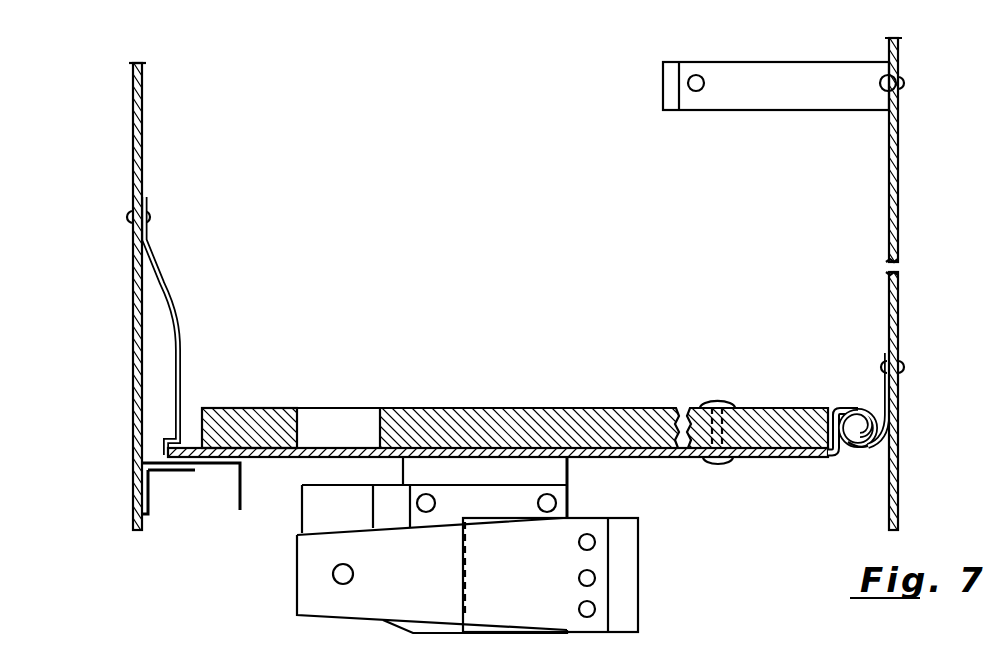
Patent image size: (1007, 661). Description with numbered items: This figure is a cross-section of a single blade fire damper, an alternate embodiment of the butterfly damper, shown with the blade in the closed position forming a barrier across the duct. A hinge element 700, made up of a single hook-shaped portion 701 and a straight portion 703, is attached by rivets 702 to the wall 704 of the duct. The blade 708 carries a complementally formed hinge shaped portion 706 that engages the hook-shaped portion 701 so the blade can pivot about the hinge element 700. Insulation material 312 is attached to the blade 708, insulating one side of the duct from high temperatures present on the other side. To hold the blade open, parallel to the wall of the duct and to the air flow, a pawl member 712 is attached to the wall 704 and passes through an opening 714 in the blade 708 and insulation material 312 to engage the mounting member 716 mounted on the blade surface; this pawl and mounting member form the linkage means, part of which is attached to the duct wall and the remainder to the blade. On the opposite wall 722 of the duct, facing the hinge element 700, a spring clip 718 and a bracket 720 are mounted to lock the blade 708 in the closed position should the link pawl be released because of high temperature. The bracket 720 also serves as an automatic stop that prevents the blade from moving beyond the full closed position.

The opposite wall 722 is at (135, 330).
The spring clip 718 is at (176, 330).
The bracket 720 is at (147, 490).
The opening 714 is at (330, 427).
The insulation material 312 is at (738, 412).
The blade 708 is at (780, 457).
The hinge shaped portion 706 is at (872, 405).
The straight portion 703 is at (897, 393).
The hinge element 700 is at (892, 427).
The hook-shaped portion 701 is at (847, 442).
The rivets 702 is at (880, 367).
The wall 704 is at (895, 145).
The pawl member 712 is at (782, 83).
The mounting member 716 is at (652, 582).